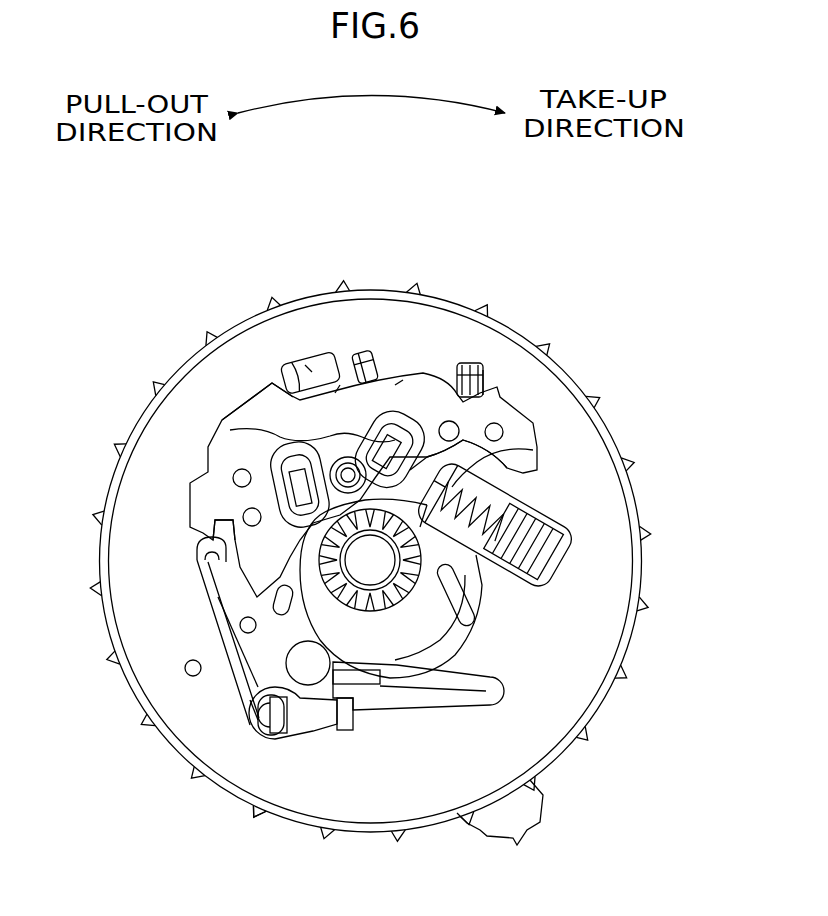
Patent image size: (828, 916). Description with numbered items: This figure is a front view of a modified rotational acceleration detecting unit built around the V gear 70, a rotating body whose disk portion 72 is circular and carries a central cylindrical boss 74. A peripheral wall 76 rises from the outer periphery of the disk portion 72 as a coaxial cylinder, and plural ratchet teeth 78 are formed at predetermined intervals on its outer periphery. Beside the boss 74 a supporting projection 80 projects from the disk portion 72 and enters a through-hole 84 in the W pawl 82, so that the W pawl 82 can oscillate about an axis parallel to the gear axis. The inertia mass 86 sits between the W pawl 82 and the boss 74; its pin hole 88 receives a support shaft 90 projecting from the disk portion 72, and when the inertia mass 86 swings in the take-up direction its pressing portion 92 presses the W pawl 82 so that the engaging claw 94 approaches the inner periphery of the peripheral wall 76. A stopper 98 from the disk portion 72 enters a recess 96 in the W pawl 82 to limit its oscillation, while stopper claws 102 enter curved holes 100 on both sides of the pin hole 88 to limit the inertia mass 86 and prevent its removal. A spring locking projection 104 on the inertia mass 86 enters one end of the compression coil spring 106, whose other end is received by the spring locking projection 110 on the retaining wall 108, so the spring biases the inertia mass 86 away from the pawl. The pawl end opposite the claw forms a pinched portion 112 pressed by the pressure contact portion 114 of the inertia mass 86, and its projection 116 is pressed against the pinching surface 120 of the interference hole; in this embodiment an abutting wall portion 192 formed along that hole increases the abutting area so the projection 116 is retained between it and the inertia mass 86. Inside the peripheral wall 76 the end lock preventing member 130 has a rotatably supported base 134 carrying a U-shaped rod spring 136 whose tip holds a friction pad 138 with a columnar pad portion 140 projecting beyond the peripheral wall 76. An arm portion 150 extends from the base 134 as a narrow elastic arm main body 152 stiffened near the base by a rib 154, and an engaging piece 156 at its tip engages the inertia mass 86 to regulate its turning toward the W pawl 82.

The V gear 70 is at (468, 240).
The disk portion 72 is at (425, 805).
The boss 74 is at (378, 614).
The peripheral wall 76 is at (362, 833).
The ratchet teeth 78 is at (501, 830).
The supporting projection 80 is at (368, 352).
The W pawl 82 is at (403, 347).
The through-hole 84 is at (343, 360).
The inertia mass 86 is at (532, 453).
The pin hole 88 is at (347, 457).
The support shaft 90 is at (318, 555).
The pressing portion 92 is at (237, 427).
The engaging claw 94 is at (260, 393).
The recess 96 is at (290, 367).
The stopper 98 is at (312, 365).
The curved holes 100 is at (385, 432).
The stopper claws 102 is at (487, 397).
The spring locking projection 104 is at (518, 453).
The compression coil spring 106 is at (512, 498).
The retaining wall 108 is at (553, 585).
The spring locking projection 110 is at (553, 537).
The pinched portion 112 is at (472, 365).
The pressure contact portion 114 is at (462, 365).
The projection 116 is at (480, 385).
The pinching surface 120 is at (483, 375).
The abutting wall portion 192 is at (478, 365).
The end lock preventing member 130 is at (265, 760).
The base 134 is at (305, 740).
The spring 136 is at (427, 717).
The friction pad 138 is at (373, 717).
The pad portion 140 is at (313, 670).
The arm portion 150 is at (227, 692).
The arm main body 152 is at (220, 628).
The rib 154 is at (203, 538).
The engaging piece 156 is at (208, 568).